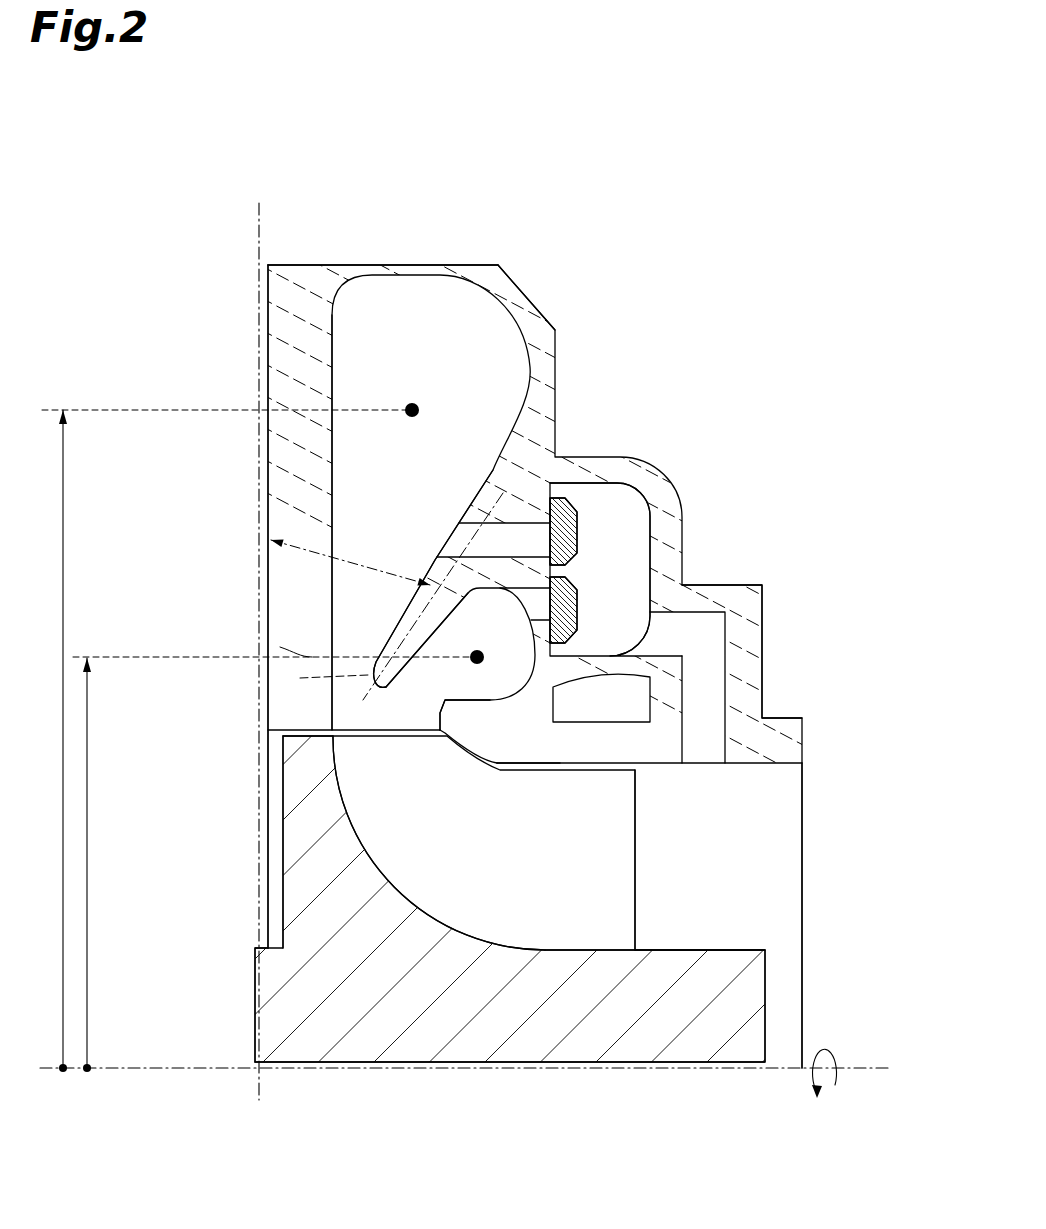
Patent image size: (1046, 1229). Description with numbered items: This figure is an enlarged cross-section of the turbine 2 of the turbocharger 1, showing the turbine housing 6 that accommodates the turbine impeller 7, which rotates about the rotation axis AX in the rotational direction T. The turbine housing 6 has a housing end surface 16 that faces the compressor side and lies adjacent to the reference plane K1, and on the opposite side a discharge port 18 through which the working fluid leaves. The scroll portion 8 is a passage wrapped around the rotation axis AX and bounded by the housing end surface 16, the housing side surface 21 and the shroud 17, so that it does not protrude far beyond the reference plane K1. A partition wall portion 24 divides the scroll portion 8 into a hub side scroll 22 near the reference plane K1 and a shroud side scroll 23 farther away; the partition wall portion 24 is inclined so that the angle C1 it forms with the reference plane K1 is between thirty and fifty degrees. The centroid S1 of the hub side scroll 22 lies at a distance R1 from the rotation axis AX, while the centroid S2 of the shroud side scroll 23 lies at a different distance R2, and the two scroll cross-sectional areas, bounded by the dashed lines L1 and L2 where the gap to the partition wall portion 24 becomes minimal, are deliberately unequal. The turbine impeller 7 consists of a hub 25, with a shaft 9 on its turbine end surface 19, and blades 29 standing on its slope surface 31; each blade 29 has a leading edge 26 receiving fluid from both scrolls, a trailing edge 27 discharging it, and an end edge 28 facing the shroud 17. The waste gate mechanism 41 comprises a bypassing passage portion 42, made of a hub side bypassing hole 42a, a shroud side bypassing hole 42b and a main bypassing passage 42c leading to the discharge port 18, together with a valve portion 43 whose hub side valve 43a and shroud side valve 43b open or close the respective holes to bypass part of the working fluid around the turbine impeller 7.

The turbocharger 1 is at (735, 252).
The turbine 2 is at (428, 262).
The turbine housing 6 is at (787, 718).
The turbine impeller 7 is at (770, 1013).
The scroll portion 8 is at (535, 459).
The shaft 9 is at (255, 948).
The housing end surface 16 is at (268, 294).
The shroud 17 is at (538, 741).
The discharge port 18 is at (777, 765).
The turbine end surface 19 is at (283, 860).
The housing side surface 21 is at (520, 288).
The hub side scroll 22 is at (498, 330).
The shroud side scroll 23 is at (472, 703).
The partition wall portion 24 is at (392, 645).
The hub 25 is at (424, 1009).
The leading edge 26 is at (440, 712).
The trailing edge 27 is at (637, 858).
The end edge 28 is at (460, 752).
The blade 29 is at (512, 831).
The slope surface 31 is at (440, 920).
The waste gate mechanism 41 is at (797, 403).
The bypassing passage portion 42 is at (722, 573).
The hub side bypassing hole 42a is at (528, 558).
The shroud side bypassing hole 42b is at (551, 618).
The main bypassing passage 42c is at (722, 640).
The valve portion 43 is at (684, 554).
The hub side valve 43a is at (578, 530).
The shroud side valve 43b is at (578, 603).
The reference plane K1 is at (259, 222).
The centroid of the hub side scroll S1 is at (412, 403).
The centroid of the shroud side scroll S2 is at (473, 652).
The angle C1 is at (366, 556).
The dashed line L1 is at (280, 647).
The dashed line L2 is at (300, 678).
The distance R1 is at (63, 600).
The distance R2 is at (87, 905).
The rotation axis AX is at (196, 1064).
The rotational direction T is at (835, 1085).